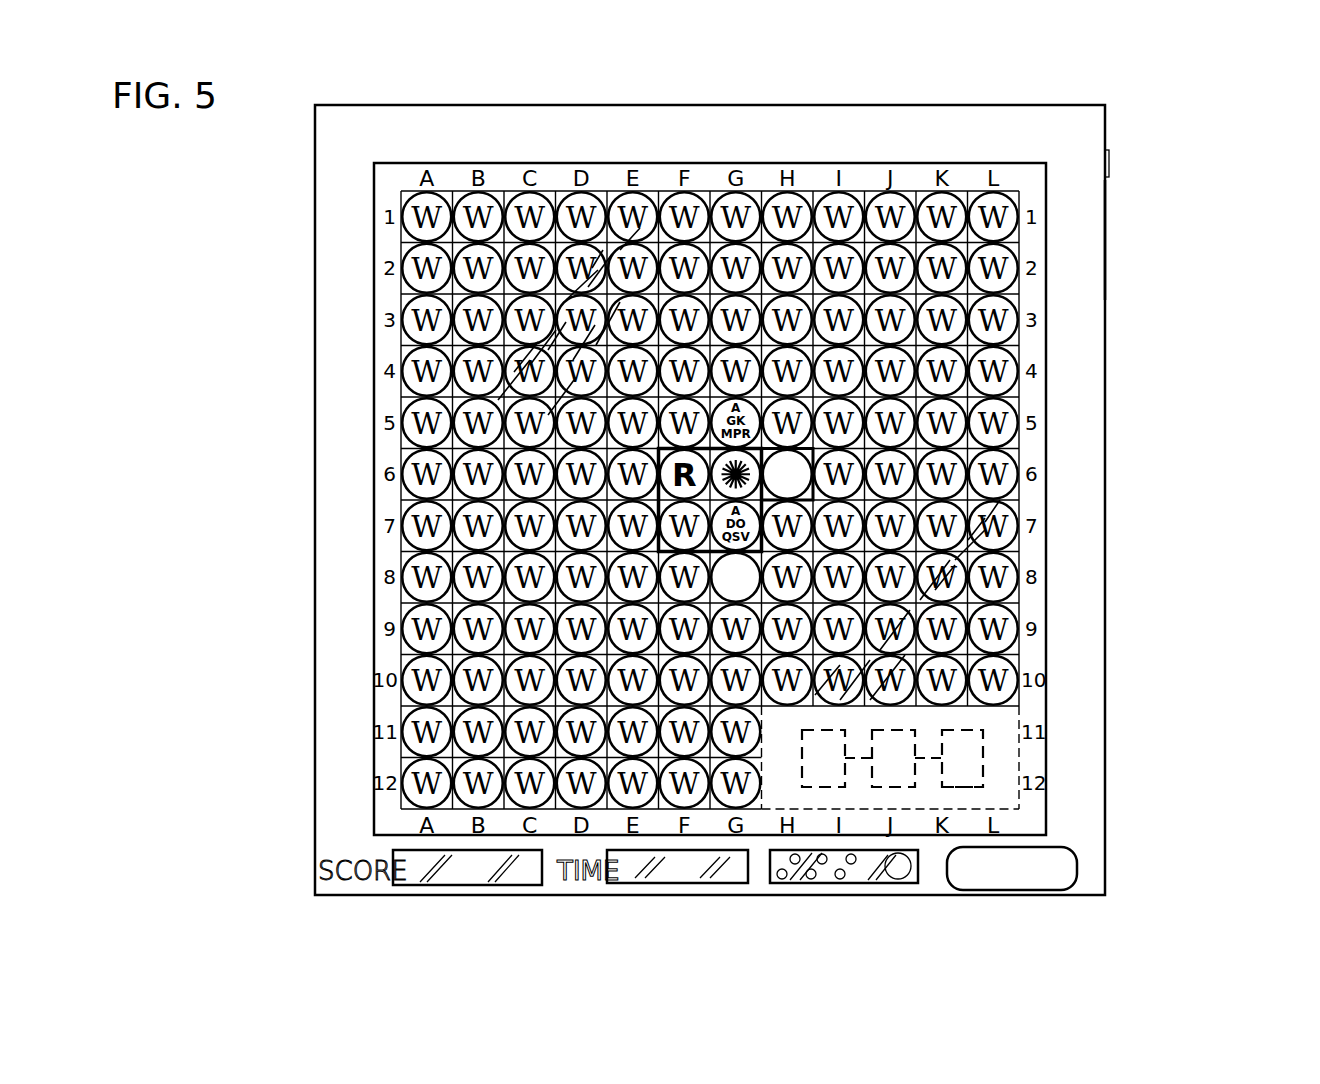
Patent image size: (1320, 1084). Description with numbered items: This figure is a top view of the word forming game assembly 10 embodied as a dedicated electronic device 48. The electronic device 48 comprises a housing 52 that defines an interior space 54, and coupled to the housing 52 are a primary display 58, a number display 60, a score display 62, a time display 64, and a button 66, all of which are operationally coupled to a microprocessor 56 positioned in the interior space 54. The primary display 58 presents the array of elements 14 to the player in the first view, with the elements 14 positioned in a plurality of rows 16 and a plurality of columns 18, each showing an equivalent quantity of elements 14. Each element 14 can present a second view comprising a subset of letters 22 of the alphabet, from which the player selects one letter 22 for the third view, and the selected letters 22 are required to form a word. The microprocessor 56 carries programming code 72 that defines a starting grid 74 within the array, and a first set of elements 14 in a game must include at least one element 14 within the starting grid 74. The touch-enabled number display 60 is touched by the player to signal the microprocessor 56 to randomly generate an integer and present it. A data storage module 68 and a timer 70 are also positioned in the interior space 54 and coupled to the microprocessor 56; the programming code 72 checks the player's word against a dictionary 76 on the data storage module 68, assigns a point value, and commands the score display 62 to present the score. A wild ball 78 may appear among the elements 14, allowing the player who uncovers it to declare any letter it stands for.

The word forming game assembly 10 is at (1194, 83).
The elements 14 is at (983, 201).
The rows 16 is at (400, 672).
The columns 18 is at (728, 188).
The letters 22 is at (752, 562).
The electronic device 48 is at (1109, 120).
The housing 52 is at (1109, 229).
The interior space 54 is at (1072, 305).
The microprocessor 56 is at (964, 742).
The primary display 58 is at (962, 622).
The number display 60 is at (877, 886).
The score display 62 is at (437, 888).
The time display 64 is at (688, 874).
The button 66 is at (1048, 893).
The data storage module 68 is at (811, 770).
The timer 70 is at (884, 774).
The programming code 72 is at (964, 765).
The starting grid 74 is at (779, 451).
The dictionary 76 is at (827, 774).
The wild ball 78 is at (755, 478).